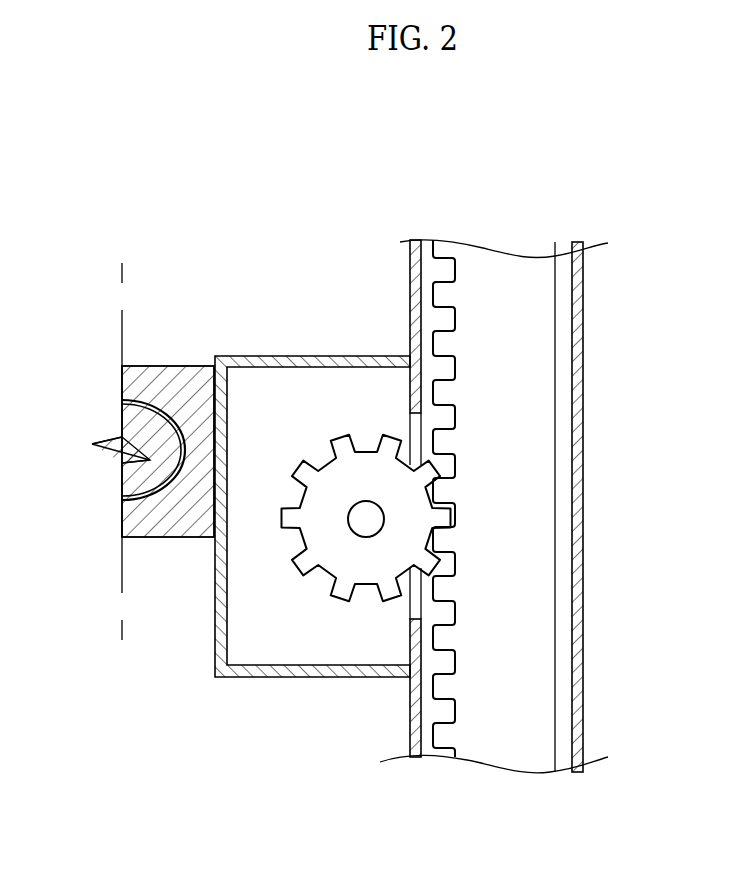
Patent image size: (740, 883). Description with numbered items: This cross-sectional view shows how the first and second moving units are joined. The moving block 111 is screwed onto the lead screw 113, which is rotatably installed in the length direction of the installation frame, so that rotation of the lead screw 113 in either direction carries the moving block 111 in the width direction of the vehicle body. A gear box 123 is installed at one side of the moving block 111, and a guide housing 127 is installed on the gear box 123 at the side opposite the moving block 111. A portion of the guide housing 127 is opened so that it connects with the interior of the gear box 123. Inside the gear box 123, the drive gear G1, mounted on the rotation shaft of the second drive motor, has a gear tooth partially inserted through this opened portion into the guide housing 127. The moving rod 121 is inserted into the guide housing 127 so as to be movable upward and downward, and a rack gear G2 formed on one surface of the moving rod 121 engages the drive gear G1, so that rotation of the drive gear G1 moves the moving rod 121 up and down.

The moving block 111 is at (176, 388).
The lead screw 113 is at (122, 413).
The moving rod 121 is at (518, 427).
The gear box 123 is at (307, 360).
The guide housing 127 is at (583, 288).
The drive gear G1 is at (337, 555).
The rack gear G2 is at (418, 693).